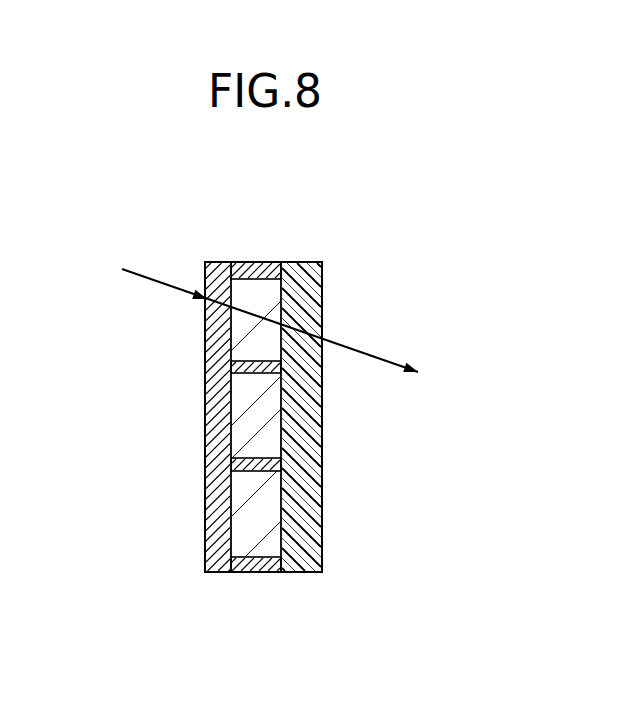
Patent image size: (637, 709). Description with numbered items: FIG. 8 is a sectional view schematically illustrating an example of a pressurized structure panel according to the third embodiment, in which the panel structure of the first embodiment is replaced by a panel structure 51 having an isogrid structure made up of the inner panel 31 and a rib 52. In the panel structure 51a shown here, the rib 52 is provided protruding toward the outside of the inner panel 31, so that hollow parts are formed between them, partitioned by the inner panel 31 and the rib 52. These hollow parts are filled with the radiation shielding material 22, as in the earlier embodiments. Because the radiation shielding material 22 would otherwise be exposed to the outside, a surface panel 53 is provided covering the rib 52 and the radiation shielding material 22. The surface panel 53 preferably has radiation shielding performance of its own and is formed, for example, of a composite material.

The panel structure 51 is at (263, 417).
The panel structure 51a is at (342, 222).
The surface panel 53 is at (205, 469).
The inner panel 31 is at (322, 473).
The rib 52 is at (245, 562).
The radiation shielding material 22 is at (258, 527).